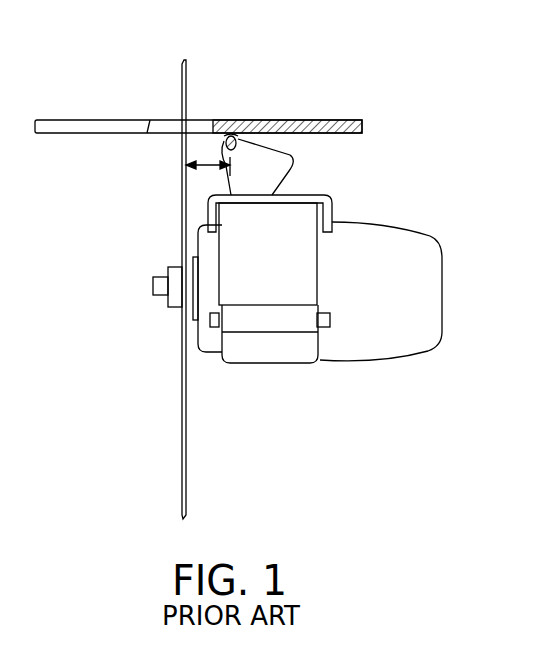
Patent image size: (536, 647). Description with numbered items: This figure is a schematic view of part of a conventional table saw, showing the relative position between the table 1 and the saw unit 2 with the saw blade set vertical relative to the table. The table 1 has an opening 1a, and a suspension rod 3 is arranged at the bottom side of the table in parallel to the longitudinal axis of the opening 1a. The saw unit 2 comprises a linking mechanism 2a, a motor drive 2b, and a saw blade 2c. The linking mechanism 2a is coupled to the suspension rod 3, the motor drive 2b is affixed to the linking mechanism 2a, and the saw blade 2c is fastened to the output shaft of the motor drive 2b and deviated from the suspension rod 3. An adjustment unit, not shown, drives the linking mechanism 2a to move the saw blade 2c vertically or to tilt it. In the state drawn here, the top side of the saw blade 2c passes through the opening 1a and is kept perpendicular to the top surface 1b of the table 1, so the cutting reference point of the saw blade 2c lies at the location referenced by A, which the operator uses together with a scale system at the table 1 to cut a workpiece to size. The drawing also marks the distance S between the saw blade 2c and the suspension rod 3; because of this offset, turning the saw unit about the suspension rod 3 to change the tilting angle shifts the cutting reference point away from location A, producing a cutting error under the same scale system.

The table 1 is at (198, 68).
The opening 1a is at (172, 120).
The top surface 1b is at (86, 120).
The saw unit 2 is at (297, 337).
The linking mechanism 2a is at (303, 325).
The motor drive 2b is at (381, 332).
The saw blade 2c is at (186, 402).
The suspension rod 3 is at (234, 137).
The cutting reference point location A is at (190, 120).
The distance S is at (208, 157).